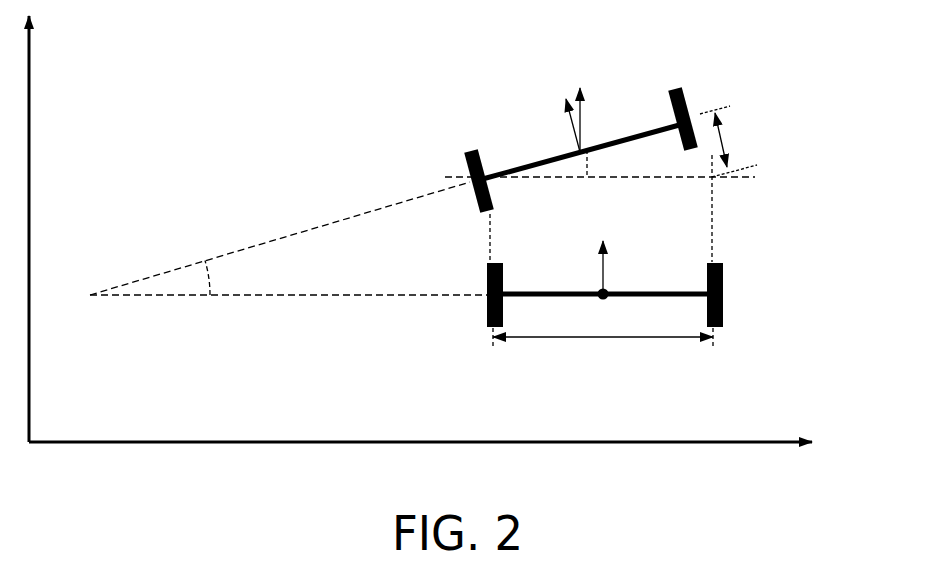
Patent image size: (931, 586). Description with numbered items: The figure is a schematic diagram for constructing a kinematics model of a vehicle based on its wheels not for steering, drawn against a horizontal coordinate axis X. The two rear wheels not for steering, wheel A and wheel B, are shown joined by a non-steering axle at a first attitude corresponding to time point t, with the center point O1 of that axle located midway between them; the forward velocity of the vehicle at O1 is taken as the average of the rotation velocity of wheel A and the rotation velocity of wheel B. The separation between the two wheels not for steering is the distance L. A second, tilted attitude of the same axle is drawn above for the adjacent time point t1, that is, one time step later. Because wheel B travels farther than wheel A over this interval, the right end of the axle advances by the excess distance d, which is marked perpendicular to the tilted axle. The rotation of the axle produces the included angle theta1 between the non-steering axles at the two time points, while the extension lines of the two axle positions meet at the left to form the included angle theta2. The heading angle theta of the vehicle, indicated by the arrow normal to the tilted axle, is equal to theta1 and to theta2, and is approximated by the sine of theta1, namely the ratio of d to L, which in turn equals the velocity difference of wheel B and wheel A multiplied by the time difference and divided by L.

The X axis X is at (438, 236).
The wheel A is at (469, 317).
The wheel B is at (744, 317).
The vehicle center point O1 is at (616, 270).
The distance between the two wheels not for steering L is at (603, 338).
The excess distance traveled by wheel B d is at (728, 141).
The heading angle theta is at (569, 122).
The included angle between non-steering wheel axles theta1 is at (606, 164).
The included angle between extension lines of non-steering axles theta2 is at (289, 238).
The time point t is at (605, 295).
The time point t+1 t1 is at (587, 150).